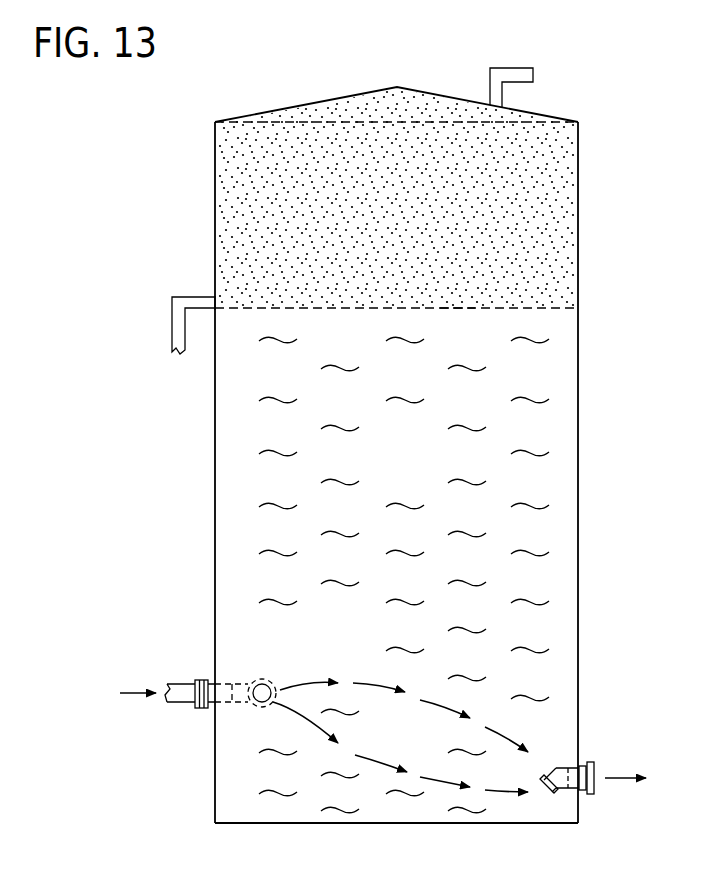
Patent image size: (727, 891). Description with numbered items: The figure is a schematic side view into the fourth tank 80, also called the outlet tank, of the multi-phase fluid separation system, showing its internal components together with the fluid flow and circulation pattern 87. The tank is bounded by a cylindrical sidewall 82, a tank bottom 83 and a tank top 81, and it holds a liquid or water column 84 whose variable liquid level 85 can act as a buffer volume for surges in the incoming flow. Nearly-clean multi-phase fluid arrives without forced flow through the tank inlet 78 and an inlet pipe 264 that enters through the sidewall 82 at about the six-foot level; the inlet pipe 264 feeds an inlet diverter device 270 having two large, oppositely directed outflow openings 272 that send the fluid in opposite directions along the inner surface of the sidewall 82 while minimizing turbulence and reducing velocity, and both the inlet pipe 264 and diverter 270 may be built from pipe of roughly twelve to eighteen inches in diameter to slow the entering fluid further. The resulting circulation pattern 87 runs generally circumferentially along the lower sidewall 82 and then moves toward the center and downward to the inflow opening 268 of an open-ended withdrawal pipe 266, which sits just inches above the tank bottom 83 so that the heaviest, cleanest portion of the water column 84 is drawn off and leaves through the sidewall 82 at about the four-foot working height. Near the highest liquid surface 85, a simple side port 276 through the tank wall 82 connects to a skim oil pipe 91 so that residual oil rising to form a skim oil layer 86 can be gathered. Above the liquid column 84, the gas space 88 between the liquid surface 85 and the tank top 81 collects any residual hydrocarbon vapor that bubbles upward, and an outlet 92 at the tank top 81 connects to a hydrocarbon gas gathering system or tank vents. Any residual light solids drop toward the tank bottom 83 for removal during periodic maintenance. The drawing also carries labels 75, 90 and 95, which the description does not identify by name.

The fourth tank 80 is at (612, 83).
The tank top 81 is at (356, 95).
The sidewall 82 is at (578, 522).
The tank bottom 83 is at (288, 823).
The liquid or water column 84 is at (414, 466).
The liquid level 85 is at (547, 307).
The skim oil layer 86 is at (457, 306).
The fluid flow and circulation pattern 87 is at (370, 757).
The gas space 88 is at (415, 220).
The outlet pipe 90 is at (583, 794).
The skim oil pipe 91 is at (172, 318).
The outlet 92 is at (512, 68).
The outlet flow 95 is at (620, 780).
The inlet flow 75 is at (127, 690).
The tank inlet 78 is at (207, 676).
The inlet pipe 264 is at (240, 703).
The withdrawal pipe 266 is at (563, 770).
The inflow opening 268 is at (553, 794).
The inlet diverter device 270 is at (272, 688).
The outflow openings 272 is at (257, 692).
The side port 276 is at (217, 302).